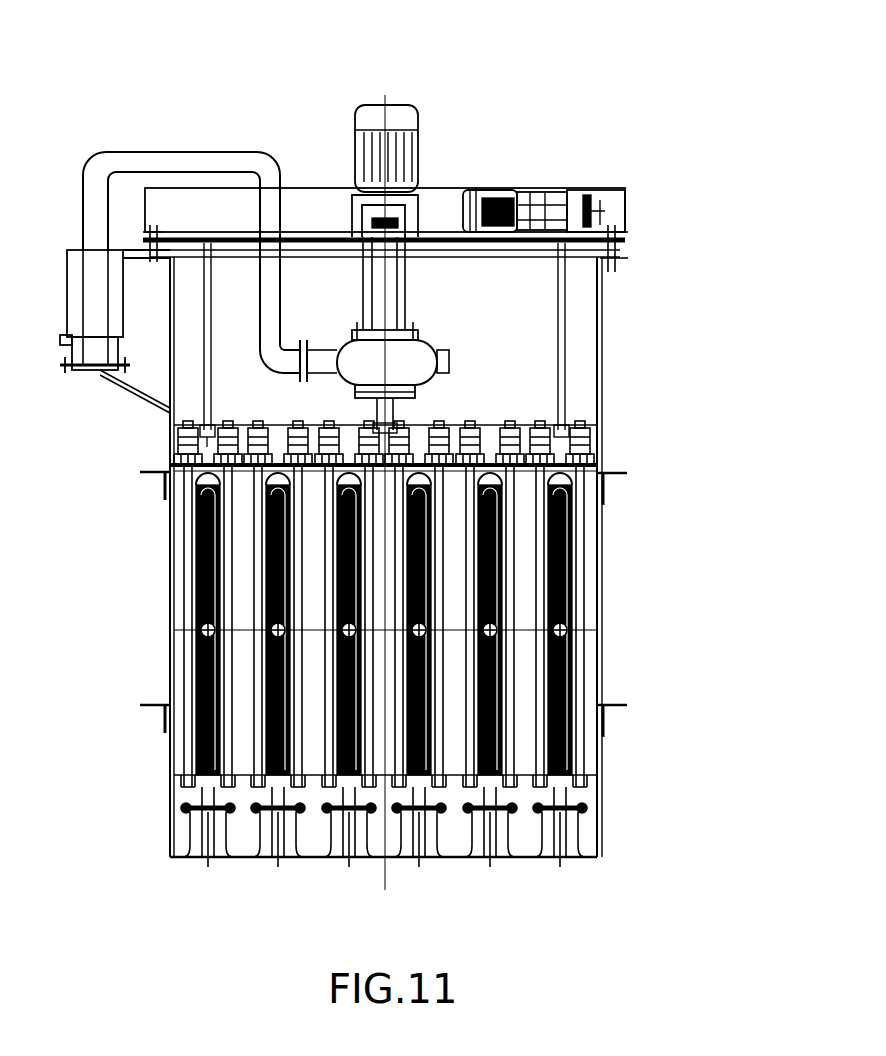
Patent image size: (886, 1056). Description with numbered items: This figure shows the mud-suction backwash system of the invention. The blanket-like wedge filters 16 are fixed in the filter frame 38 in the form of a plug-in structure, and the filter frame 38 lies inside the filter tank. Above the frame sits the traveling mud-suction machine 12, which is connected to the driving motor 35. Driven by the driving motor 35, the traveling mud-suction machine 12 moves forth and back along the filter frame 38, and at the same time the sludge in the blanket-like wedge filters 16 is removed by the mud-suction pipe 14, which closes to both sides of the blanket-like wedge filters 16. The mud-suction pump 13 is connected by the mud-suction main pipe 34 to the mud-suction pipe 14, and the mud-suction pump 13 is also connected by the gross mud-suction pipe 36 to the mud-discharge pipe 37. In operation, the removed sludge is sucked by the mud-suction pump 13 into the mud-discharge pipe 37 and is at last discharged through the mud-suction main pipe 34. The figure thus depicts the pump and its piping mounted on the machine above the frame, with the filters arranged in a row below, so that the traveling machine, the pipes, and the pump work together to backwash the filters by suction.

The traveling mud-suction machine 12 is at (445, 238).
The mud-suction pump 13 is at (373, 231).
The mud-suction pipe 14 is at (442, 562).
The blanket-like wedge filters 16 is at (470, 597).
The mud-suction main pipe 34 is at (458, 330).
The driving motor 35 is at (544, 131).
The gross mud-suction pipe 36 is at (210, 206).
The mud-discharge pipe 37 is at (114, 221).
The filter frame 38 is at (464, 544).